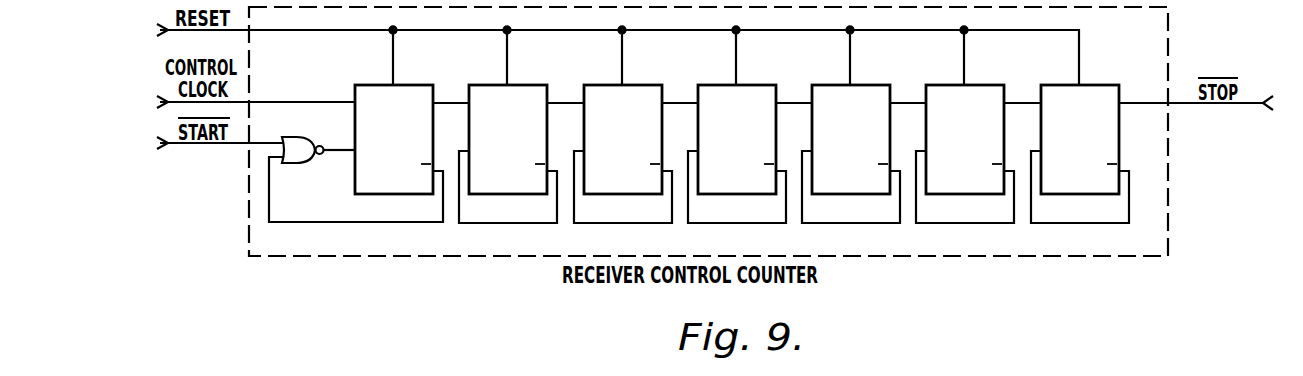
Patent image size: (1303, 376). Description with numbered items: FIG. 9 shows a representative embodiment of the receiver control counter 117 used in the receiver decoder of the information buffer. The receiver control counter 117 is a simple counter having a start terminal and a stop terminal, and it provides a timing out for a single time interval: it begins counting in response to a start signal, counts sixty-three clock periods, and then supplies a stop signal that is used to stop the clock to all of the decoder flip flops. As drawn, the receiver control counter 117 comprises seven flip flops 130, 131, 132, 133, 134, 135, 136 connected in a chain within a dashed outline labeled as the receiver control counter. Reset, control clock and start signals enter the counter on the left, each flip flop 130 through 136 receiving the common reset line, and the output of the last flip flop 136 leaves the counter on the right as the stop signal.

The receiver control counter 117 is at (1168, 46).
The flip flop 130 is at (375, 85).
The flip flop 131 is at (489, 85).
The flip flop 132 is at (604, 85).
The flip flop 133 is at (718, 85).
The flip flop 134 is at (832, 85).
The flip flop 135 is at (946, 85).
The flip flop 136 is at (1061, 85).